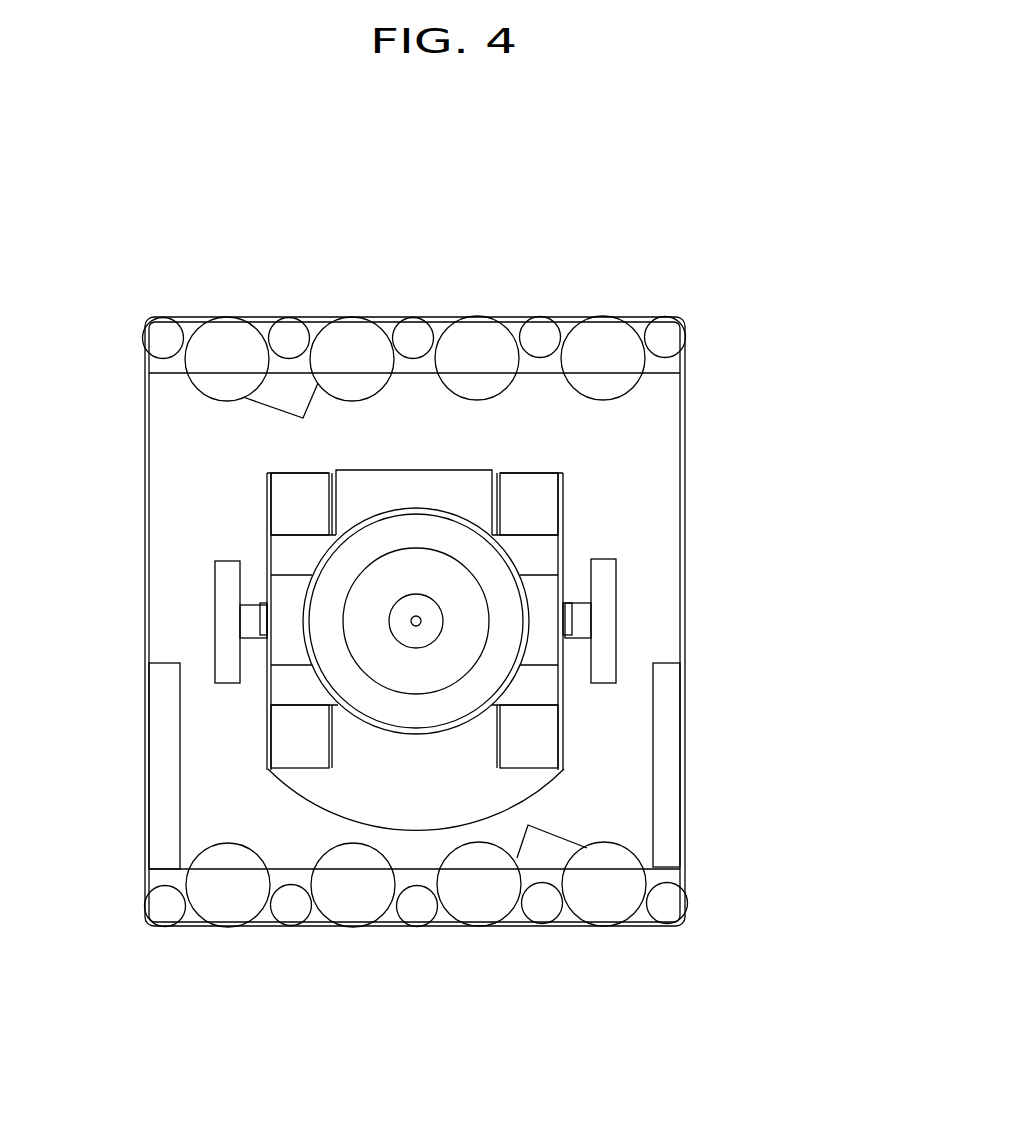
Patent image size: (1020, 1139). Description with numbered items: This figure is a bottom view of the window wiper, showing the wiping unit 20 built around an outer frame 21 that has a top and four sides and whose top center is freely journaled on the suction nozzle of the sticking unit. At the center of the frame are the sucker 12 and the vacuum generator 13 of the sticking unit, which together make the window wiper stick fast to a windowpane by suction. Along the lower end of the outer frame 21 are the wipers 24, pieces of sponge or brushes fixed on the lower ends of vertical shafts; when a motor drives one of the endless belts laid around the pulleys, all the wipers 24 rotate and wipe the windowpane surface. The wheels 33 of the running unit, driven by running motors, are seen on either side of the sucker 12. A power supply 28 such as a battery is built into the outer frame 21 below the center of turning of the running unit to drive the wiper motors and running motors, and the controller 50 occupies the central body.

The wiping unit 20 is at (229, 238).
The outer frame 21 is at (170, 443).
The wipers 24 is at (357, 345).
The power supply 28 is at (162, 732).
The wheels 33 is at (225, 587).
The controller 50 is at (467, 793).
The vacuum generator 13 is at (451, 488).
The sucker 12 is at (493, 567).